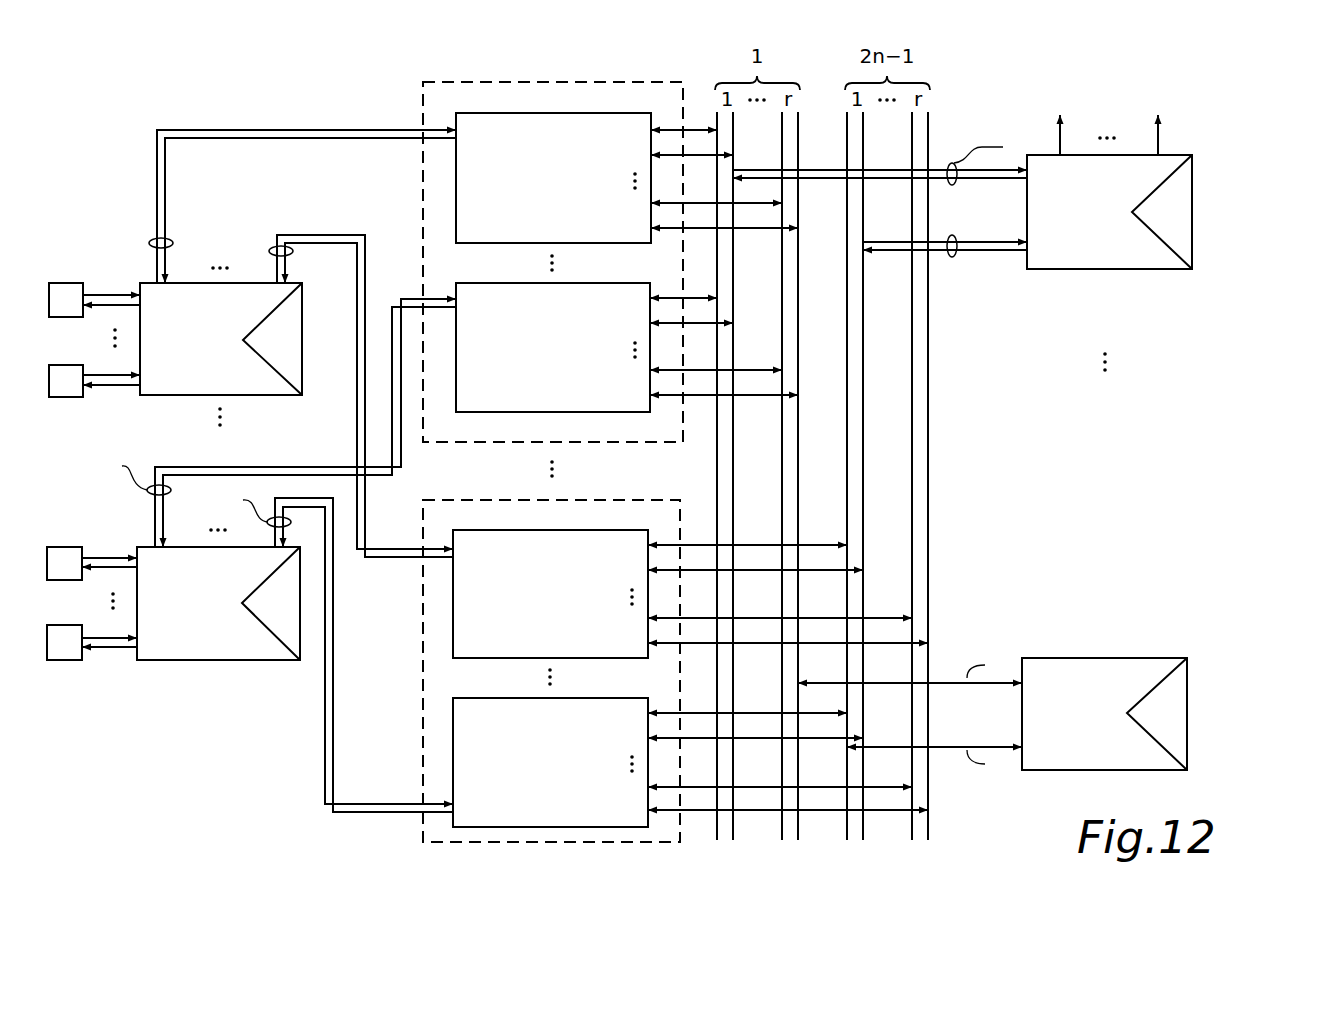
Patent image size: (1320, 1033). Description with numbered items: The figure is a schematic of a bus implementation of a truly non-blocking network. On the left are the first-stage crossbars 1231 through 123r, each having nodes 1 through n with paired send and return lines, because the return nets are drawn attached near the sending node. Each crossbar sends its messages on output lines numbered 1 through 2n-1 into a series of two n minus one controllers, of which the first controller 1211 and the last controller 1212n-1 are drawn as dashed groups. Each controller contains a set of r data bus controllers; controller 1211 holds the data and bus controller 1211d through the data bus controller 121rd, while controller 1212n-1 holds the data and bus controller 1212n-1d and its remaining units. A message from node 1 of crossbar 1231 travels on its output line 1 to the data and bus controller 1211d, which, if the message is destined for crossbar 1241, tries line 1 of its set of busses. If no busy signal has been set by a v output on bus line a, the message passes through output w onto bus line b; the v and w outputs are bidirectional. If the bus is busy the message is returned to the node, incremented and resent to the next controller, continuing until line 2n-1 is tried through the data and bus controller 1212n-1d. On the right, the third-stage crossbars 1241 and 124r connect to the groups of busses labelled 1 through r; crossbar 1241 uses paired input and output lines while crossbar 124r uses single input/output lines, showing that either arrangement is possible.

The controller 1211 is at (423, 82).
The data and bus controller 1211d is at (503, 243).
The data bus controller 121rd is at (537, 332).
The data and bus controller 1212n-1d is at (583, 578).
The controller 1212n-1 is at (450, 842).
The crossbar 1231 is at (205, 332).
The crossbar 123r is at (205, 594).
The crossbar 1241 is at (1183, 237).
The crossbar 124r is at (1177, 735).
The bus line a is at (718, 431).
The bus line b is at (734, 485).
The line 1 is at (149, 243).
The node n is at (94, 381).
The line r is at (954, 258).
The line 2n-1 is at (269, 251).